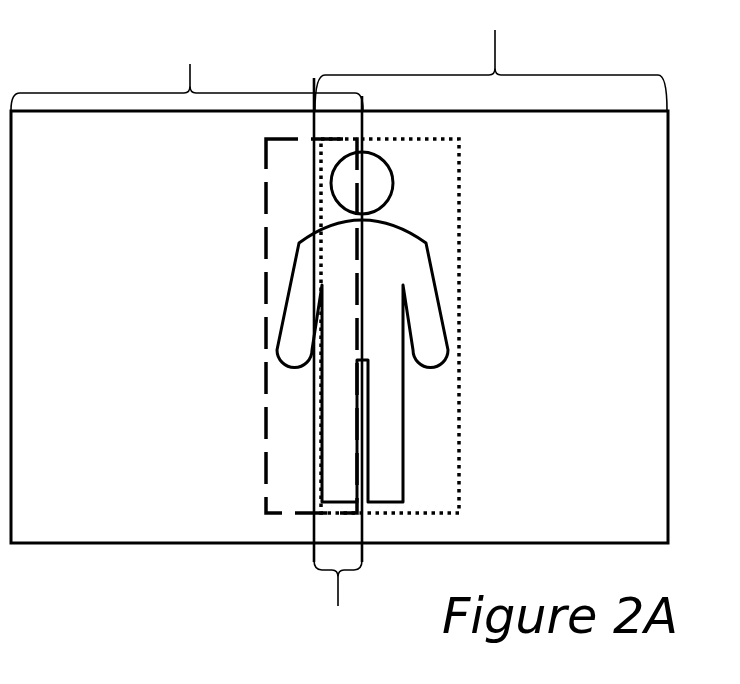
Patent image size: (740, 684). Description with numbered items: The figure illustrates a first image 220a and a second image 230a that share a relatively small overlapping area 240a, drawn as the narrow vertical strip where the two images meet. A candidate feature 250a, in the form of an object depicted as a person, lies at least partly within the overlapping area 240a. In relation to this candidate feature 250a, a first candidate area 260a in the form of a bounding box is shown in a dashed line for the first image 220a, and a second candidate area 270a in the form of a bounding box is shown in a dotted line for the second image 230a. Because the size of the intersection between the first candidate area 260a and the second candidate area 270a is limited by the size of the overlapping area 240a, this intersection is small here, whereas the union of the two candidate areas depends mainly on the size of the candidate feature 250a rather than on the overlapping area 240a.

The first image 220a is at (187, 71).
The second image 230a is at (491, 55).
The overlapping area 240a is at (345, 360).
The candidate feature 250a is at (428, 250).
The first candidate area 260a is at (266, 238).
The second candidate area 270a is at (460, 423).